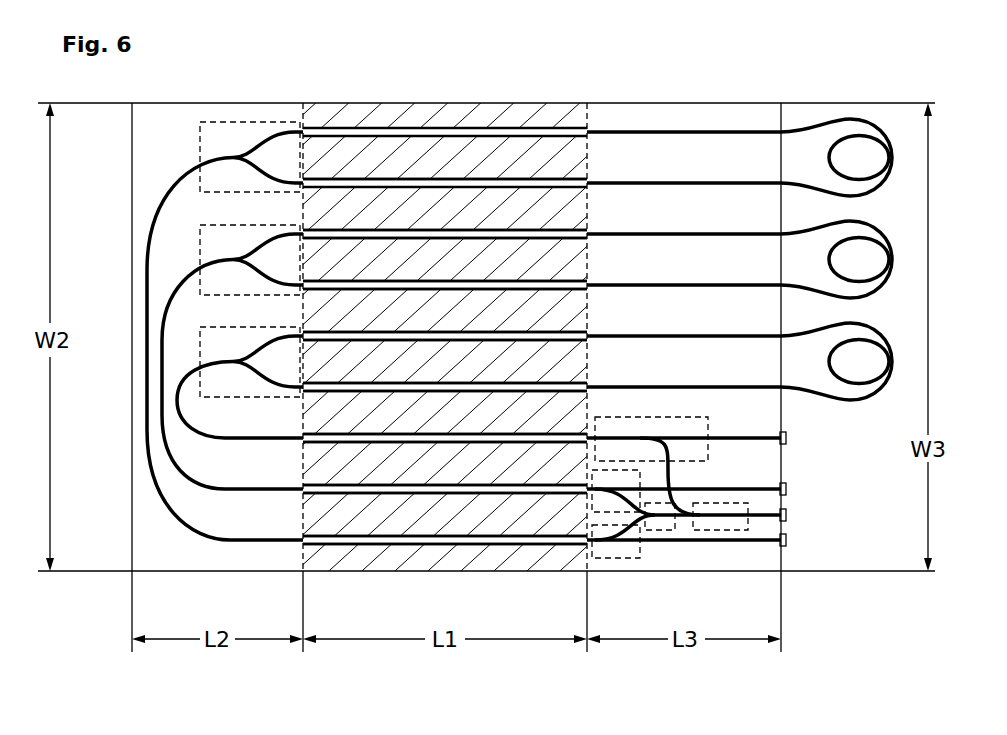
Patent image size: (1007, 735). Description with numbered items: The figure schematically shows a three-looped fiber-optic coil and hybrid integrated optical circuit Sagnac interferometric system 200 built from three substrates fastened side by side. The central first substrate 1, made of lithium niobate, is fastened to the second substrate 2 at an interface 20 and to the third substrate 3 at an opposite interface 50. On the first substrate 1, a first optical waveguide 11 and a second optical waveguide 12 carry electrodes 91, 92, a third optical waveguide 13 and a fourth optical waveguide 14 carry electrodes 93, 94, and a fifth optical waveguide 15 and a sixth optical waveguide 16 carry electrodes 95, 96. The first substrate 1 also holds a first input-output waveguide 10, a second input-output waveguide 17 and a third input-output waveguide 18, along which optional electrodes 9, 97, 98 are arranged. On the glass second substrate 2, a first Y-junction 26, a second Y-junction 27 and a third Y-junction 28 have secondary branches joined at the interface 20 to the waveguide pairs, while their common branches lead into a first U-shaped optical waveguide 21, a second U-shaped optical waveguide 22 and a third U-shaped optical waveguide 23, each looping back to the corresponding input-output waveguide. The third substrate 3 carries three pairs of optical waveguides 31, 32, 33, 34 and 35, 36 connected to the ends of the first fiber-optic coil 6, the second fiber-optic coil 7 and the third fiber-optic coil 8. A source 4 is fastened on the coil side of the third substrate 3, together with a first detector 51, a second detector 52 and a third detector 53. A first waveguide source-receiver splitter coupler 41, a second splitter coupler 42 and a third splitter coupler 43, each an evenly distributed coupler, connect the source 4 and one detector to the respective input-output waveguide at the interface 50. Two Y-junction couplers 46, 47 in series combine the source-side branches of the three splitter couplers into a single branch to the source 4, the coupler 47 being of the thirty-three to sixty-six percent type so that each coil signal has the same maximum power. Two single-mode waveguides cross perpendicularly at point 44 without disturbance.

The interferometric system 200 is at (790, 68).
The first substrate 1 is at (330, 573).
The second substrate 2 is at (150, 572).
The third substrate 3 is at (650, 103).
The interface 20 is at (303, 560).
The interface 50 is at (590, 118).
The sixth optical waveguide 16 is at (352, 127).
The fifth optical waveguide 15 is at (395, 178).
The electrodes 96 is at (447, 135).
The electrodes 95 is at (504, 184).
The electrodes 94 is at (440, 234).
The electrodes 93 is at (440, 285).
The electrodes 92 is at (440, 336).
The electrodes 91 is at (440, 387).
The electrodes 9 is at (440, 438).
The electrodes 97 is at (440, 489).
The electrodes 98 is at (440, 540).
The fourth optical waveguide 14 is at (492, 229).
The third optical waveguide 13 is at (492, 280).
The second optical waveguide 12 is at (492, 331).
The first optical waveguide 11 is at (492, 382).
The first input-output waveguide 10 is at (492, 433).
The second input-output waveguide 17 is at (492, 484).
The third input-output waveguide 18 is at (492, 535).
The third Y-junction 28 is at (200, 133).
The second Y-junction 27 is at (200, 250).
The first Y-junction 26 is at (200, 340).
The first U-shaped optical waveguide 21 is at (177, 400).
The second U-shaped optical waveguide 22 is at (163, 443).
The third U-shaped optical waveguide 23 is at (160, 484).
The optical waveguide 36 is at (738, 131).
The optical waveguide 35 is at (700, 182).
The optical waveguide 34 is at (755, 233).
The optical waveguide 33 is at (755, 284).
The optical waveguide 32 is at (755, 335).
The optical waveguide 31 is at (755, 386).
The third fiber-optic coil 8 is at (858, 143).
The second fiber-optic coil 7 is at (858, 245).
The first fiber-optic coil 6 is at (858, 347).
The first detector 51 is at (786, 437).
The second detector 52 is at (786, 488).
The third detector 53 is at (786, 540).
The source 4 is at (786, 515).
The first waveguide source-receiver splitter coupler 41 is at (708, 425).
The crossing point 44 is at (672, 478).
The second waveguide source-receiver splitter coupler 42 is at (600, 513).
The third waveguide source-receiver splitter coupler 43 is at (612, 558).
The Y-junction coupler 46 is at (658, 530).
The Y-junction coupler 47 is at (718, 530).